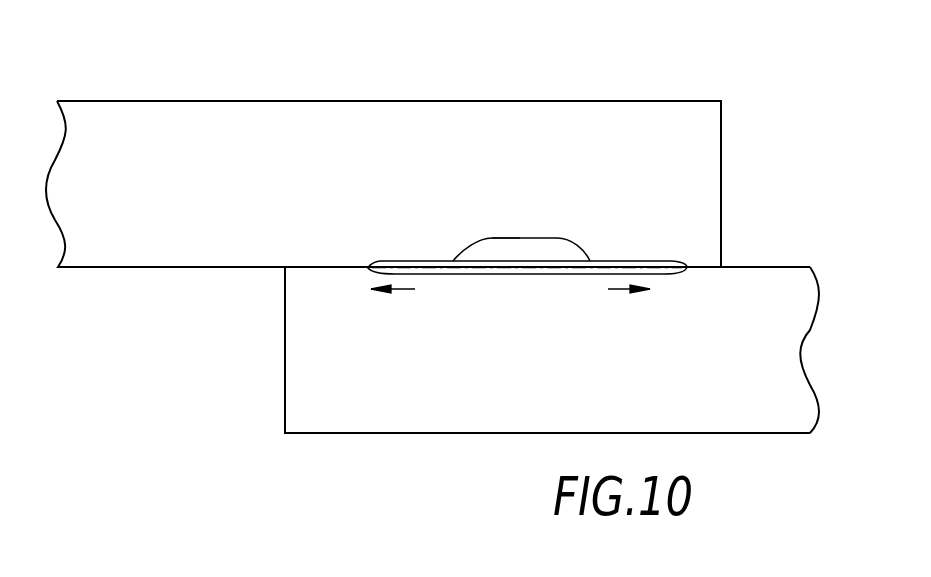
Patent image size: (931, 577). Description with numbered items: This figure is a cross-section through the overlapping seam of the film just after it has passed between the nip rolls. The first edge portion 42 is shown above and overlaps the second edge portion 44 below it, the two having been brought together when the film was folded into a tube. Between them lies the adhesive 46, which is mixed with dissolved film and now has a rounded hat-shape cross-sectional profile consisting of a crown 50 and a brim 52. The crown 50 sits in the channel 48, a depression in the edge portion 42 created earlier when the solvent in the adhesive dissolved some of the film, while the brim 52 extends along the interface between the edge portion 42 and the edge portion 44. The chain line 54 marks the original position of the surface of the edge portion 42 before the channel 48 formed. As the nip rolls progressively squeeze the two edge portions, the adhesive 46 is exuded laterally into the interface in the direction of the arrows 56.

The edge portion 42 is at (558, 113).
The edge portion 44 is at (417, 413).
The adhesive 46 is at (534, 279).
The channel 48 is at (497, 238).
The crown 50 is at (570, 240).
The brim 52 is at (660, 262).
The chain line 54 is at (553, 272).
The arrows 56 is at (407, 290).